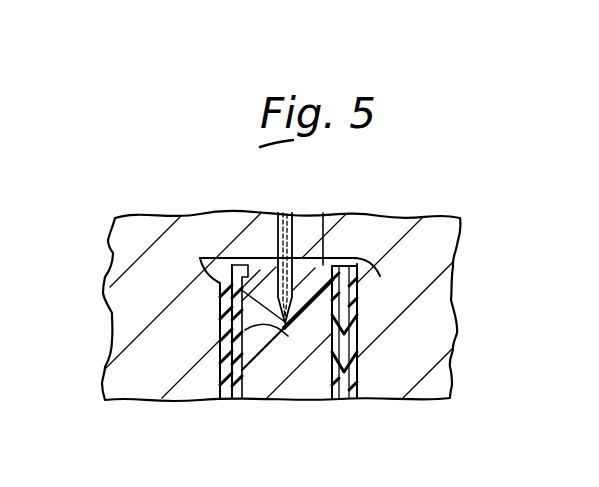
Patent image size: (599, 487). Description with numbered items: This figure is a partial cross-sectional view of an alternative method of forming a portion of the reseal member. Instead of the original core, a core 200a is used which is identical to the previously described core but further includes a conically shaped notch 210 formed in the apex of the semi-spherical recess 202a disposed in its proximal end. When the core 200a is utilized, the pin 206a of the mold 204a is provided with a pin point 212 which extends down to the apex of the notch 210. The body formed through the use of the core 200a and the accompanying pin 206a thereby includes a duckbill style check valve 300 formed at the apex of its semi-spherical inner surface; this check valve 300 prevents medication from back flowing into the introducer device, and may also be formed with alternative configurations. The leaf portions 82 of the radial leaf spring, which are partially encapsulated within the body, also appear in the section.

The core 200a is at (290, 385).
The semi-spherical recess 202a is at (220, 300).
The mold 204a is at (437, 237).
The pin 206a is at (278, 233).
The conically shaped notch 210 is at (324, 213).
The pin point 212 is at (245, 330).
The duckbill style check valve 300 is at (245, 330).
The leaf portions 82 is at (337, 380).